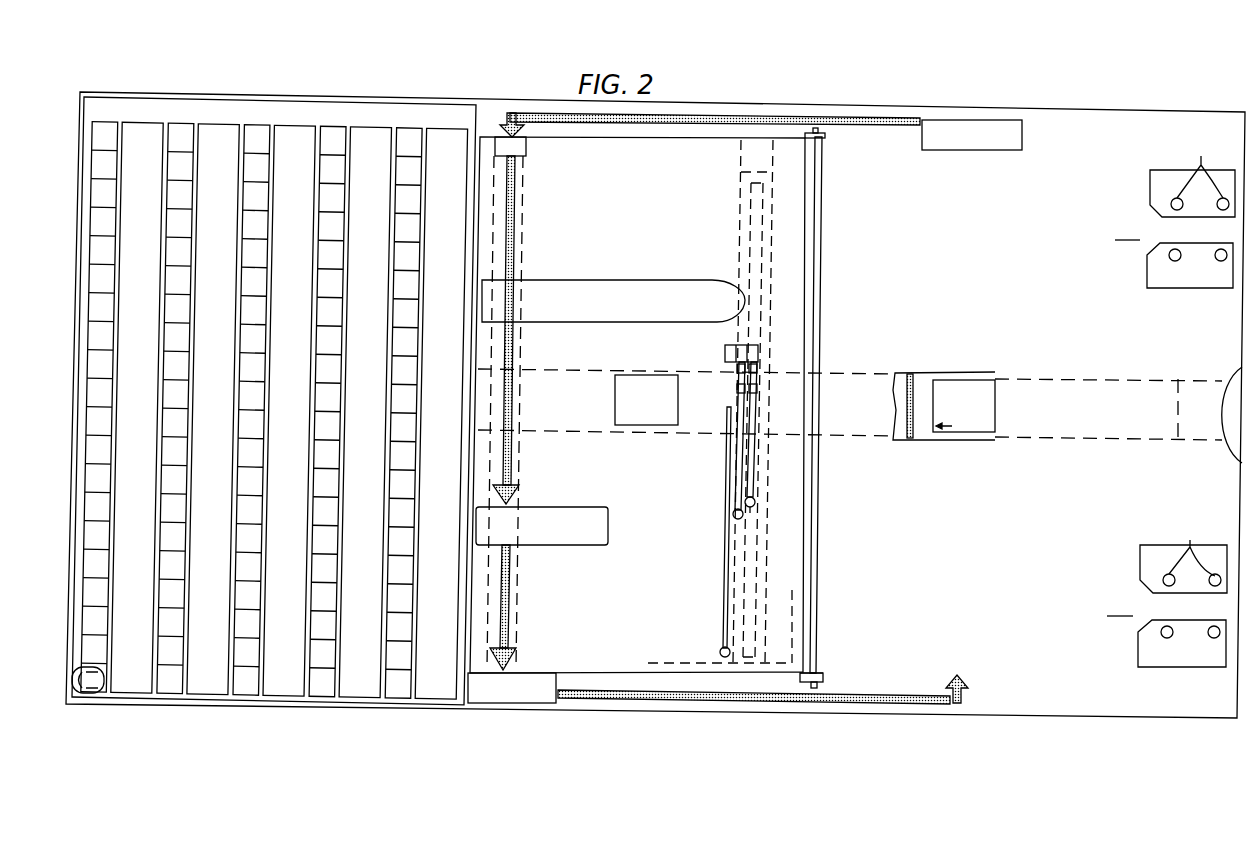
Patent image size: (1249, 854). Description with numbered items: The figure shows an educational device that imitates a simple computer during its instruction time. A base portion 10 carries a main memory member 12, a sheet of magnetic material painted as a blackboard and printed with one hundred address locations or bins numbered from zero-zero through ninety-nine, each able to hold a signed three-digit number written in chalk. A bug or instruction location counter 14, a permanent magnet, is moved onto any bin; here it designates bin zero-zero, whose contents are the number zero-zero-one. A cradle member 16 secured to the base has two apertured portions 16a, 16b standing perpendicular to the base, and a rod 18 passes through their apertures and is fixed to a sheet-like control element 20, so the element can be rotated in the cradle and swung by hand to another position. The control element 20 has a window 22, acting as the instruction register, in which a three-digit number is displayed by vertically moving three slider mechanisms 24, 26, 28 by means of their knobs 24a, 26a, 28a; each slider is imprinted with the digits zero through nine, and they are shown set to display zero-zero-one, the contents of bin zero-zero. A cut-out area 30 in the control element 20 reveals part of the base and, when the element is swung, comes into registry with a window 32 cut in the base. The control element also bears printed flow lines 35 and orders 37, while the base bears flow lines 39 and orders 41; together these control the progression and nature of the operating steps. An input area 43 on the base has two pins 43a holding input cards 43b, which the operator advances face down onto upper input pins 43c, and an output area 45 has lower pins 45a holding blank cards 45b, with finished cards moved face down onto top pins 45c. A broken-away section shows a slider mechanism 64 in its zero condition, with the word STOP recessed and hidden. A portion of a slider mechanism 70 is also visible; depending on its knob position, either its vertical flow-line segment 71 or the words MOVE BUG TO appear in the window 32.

The base portion 10 is at (490, 112).
The main memory member 12 is at (88, 104).
The bug or instruction location counter 14 is at (72, 682).
The cradle member 16 is at (823, 177).
The apertured portion 16a is at (825, 138).
The apertured portion 16b is at (824, 681).
The rod 18 is at (812, 672).
The control element 20 is at (691, 152).
The window 22 is at (759, 352).
The slider mechanism 24 is at (724, 552).
The knob 24a is at (722, 648).
The slider mechanism 26 is at (736, 478).
The knob 26a is at (733, 514).
The slider mechanism 28 is at (756, 469).
The knob 28a is at (756, 503).
The cut-out area 30 is at (615, 399).
The window 32 is at (1000, 408).
The flow lines 35 is at (516, 225).
The orders 37 is at (608, 279).
The flow lines 39 is at (903, 125).
The orders 41 is at (1023, 135).
The input area 43 is at (1149, 611).
The input pins 43a is at (1209, 636).
The input cards 43b is at (1155, 666).
The upper input pins 43c is at (1183, 559).
The output area 45 is at (1157, 231).
The lower output pins 45a is at (1216, 259).
The blank cards 45b is at (1197, 290).
The top output pins 45c is at (1192, 178).
The slider mechanism 64 is at (540, 137).
The slider mechanism 70 is at (925, 428).
The vertical flow-line segment 71 is at (913, 385).